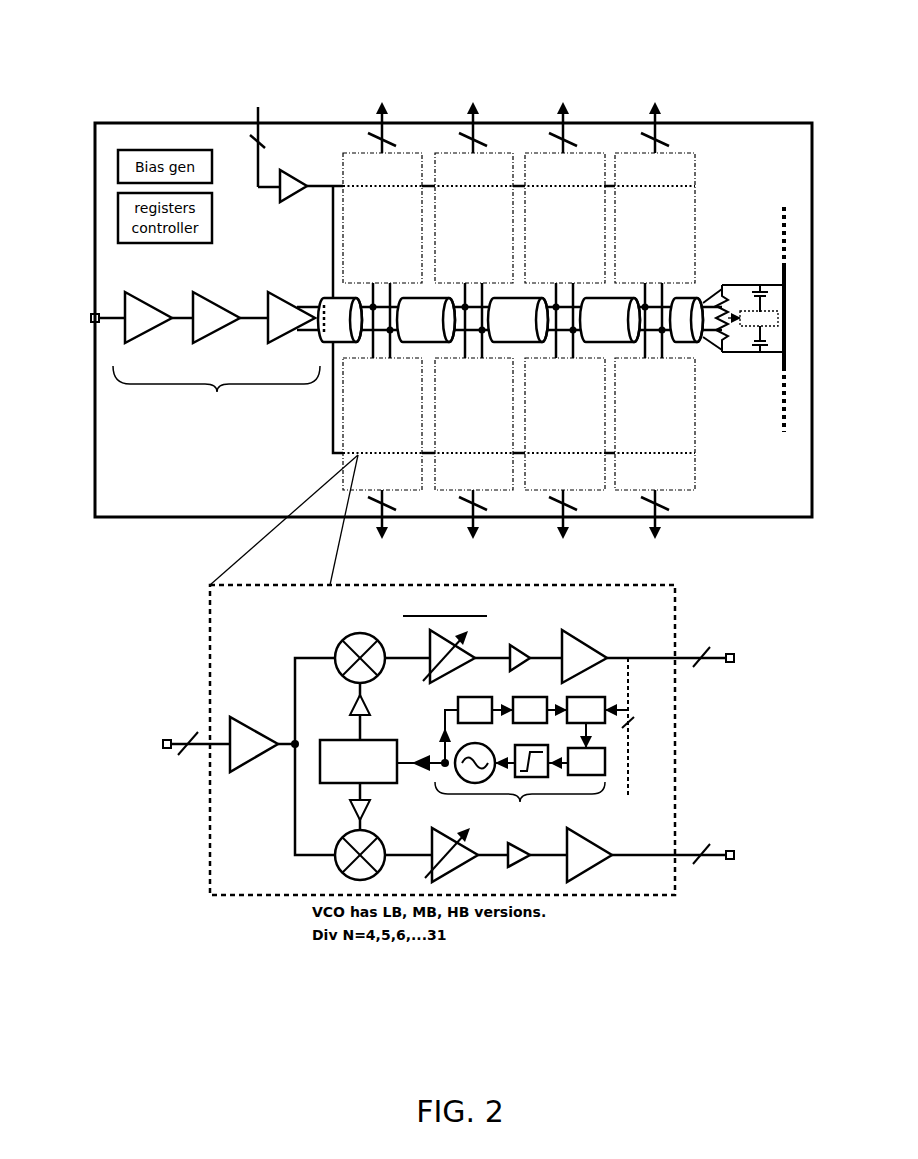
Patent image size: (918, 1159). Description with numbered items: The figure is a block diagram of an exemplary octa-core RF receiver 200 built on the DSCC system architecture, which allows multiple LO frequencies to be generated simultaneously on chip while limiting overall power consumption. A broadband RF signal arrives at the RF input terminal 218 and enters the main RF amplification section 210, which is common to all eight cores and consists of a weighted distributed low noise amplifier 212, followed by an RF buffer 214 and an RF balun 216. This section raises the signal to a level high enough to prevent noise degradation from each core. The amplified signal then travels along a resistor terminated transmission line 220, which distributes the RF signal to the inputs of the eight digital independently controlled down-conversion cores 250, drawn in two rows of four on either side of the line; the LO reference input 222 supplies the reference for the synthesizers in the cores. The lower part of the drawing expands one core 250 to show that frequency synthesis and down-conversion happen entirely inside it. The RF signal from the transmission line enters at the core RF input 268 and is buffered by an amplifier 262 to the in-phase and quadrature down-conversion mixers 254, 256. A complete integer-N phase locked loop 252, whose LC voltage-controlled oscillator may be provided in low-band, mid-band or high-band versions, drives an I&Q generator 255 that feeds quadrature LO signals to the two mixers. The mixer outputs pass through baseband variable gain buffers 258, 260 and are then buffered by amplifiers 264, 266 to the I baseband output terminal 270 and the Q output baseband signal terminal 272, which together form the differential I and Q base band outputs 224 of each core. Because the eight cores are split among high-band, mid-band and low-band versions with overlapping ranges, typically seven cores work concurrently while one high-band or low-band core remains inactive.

The octa-core RF receiver 200 is at (763, 28).
The main RF amplification section 210 is at (216, 392).
The weighted distributed low noise amplifier 212 is at (150, 295).
The RF buffer 214 is at (218, 295).
The RF balun 216 is at (286, 295).
The RF input terminal 218 is at (87, 328).
The resistor terminated transmission line 220 is at (704, 341).
The LO reference input 222 is at (263, 118).
The base band outputs 224 is at (391, 104).
The down-conversion core 250 is at (728, 588).
The integer-N phase locked loop 252 is at (522, 745).
The I down-conversion mixer 254 is at (335, 643).
The I&Q generator 255 is at (335, 740).
The Q down-conversion mixer 256 is at (340, 870).
The I baseband variable gain buffer 258 is at (463, 645).
The Q baseband variable gain buffer 260 is at (462, 868).
The amplifier 262 is at (268, 712).
The I output amplifier 264 is at (590, 638).
The Q output amplifier 266 is at (605, 870).
The RX core RF input 268 is at (170, 757).
The I baseband output terminal 270 is at (722, 668).
The Q output baseband signal terminal 272 is at (722, 865).